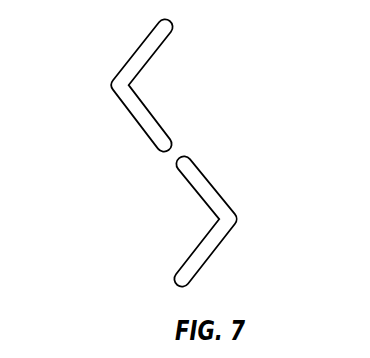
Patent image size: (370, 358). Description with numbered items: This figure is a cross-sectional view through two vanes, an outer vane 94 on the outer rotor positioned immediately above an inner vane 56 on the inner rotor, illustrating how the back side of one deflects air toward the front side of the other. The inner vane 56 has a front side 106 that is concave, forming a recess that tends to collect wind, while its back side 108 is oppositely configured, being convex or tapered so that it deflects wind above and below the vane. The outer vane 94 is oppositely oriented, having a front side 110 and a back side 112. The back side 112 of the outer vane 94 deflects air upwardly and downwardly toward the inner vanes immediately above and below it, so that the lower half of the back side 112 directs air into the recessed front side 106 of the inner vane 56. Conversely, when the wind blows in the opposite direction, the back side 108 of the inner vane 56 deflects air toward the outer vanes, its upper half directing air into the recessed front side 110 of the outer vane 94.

The outer vane 94 is at (138, 47).
The front side 110 is at (148, 110).
The back side 112 is at (121, 102).
The front side 106 is at (183, 181).
The back side 108 is at (230, 205).
The inner vane 56 is at (227, 245).